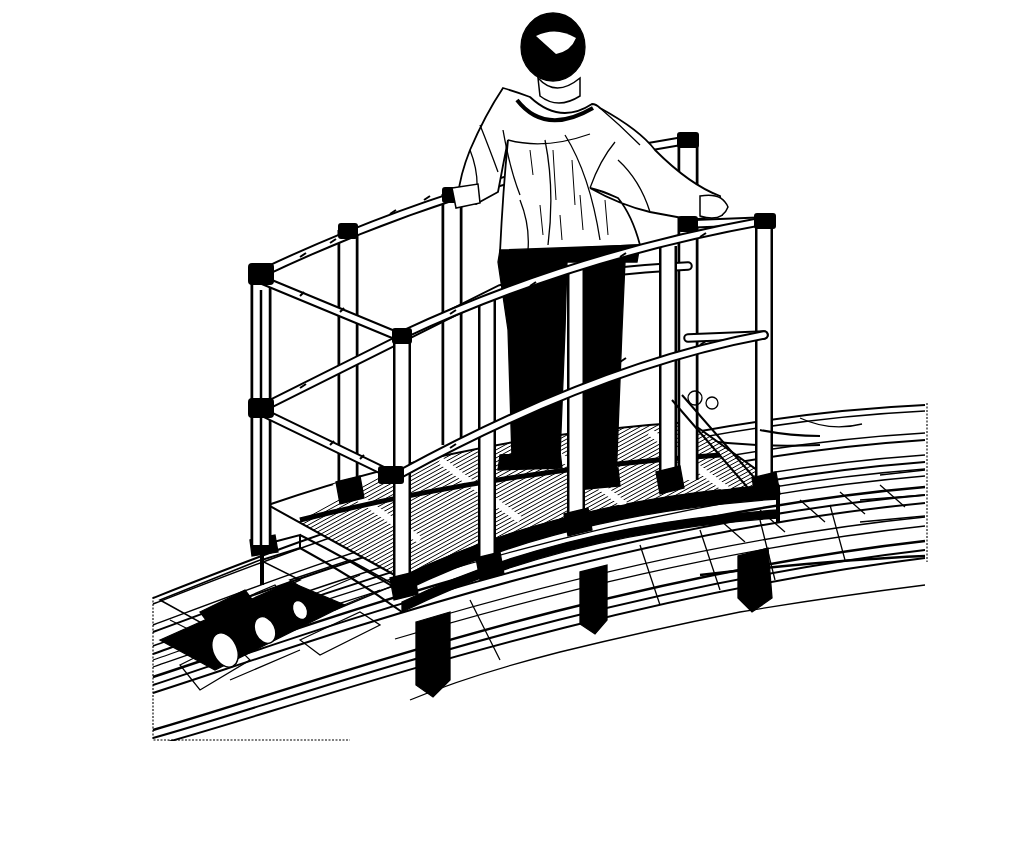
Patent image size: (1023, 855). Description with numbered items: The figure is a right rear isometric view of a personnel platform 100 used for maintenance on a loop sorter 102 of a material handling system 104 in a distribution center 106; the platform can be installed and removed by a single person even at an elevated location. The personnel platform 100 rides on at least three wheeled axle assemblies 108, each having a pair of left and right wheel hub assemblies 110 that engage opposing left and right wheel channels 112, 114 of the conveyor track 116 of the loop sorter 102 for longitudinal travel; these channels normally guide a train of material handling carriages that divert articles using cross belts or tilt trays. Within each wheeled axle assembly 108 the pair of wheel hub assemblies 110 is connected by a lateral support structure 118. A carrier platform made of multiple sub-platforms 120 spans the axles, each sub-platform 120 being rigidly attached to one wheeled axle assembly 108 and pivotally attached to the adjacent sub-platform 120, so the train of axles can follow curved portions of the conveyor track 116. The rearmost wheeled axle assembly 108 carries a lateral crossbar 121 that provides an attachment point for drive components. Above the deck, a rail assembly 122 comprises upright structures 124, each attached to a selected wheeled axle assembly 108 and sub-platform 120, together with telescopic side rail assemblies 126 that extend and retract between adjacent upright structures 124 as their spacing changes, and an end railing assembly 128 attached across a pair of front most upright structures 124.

The personnel platform 100 is at (246, 388).
The loop sorter 102 is at (893, 400).
The material handling system 104 is at (176, 309).
The distribution center 106 is at (861, 197).
The wheeled axle assembly 108 is at (347, 486).
The wheel hub assembly 110 is at (865, 525).
The left wheel channel 112 is at (848, 420).
The right wheel channel 114 is at (922, 527).
The conveyor track 116 is at (203, 582).
The lateral support structure 118 is at (527, 597).
The sub-platform 120 is at (740, 583).
The lateral crossbar 121 is at (296, 535).
The rail assembly 122 is at (297, 258).
The upright structure 124 is at (363, 273).
The side rail assembly 126 is at (416, 212).
The end railing assembly 128 is at (250, 266).